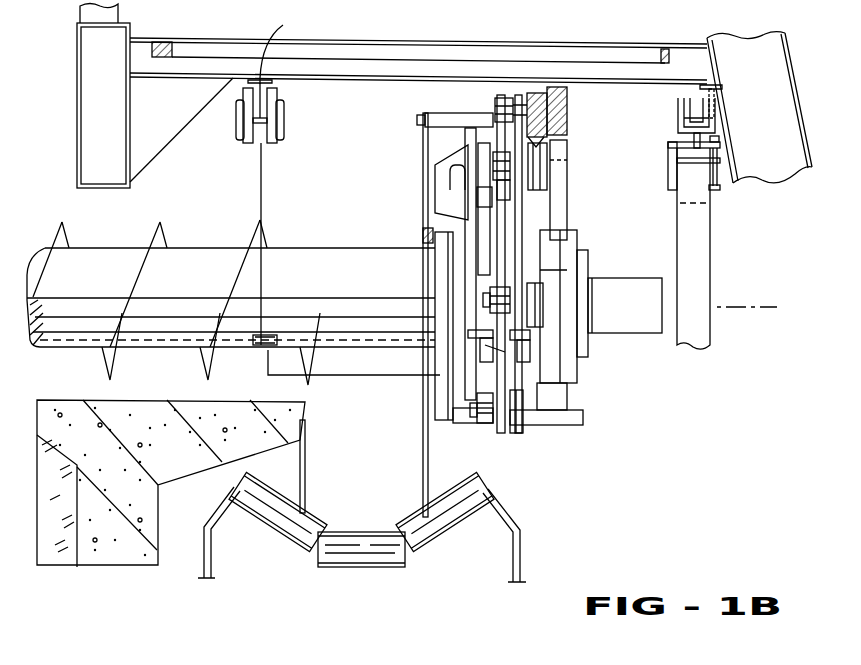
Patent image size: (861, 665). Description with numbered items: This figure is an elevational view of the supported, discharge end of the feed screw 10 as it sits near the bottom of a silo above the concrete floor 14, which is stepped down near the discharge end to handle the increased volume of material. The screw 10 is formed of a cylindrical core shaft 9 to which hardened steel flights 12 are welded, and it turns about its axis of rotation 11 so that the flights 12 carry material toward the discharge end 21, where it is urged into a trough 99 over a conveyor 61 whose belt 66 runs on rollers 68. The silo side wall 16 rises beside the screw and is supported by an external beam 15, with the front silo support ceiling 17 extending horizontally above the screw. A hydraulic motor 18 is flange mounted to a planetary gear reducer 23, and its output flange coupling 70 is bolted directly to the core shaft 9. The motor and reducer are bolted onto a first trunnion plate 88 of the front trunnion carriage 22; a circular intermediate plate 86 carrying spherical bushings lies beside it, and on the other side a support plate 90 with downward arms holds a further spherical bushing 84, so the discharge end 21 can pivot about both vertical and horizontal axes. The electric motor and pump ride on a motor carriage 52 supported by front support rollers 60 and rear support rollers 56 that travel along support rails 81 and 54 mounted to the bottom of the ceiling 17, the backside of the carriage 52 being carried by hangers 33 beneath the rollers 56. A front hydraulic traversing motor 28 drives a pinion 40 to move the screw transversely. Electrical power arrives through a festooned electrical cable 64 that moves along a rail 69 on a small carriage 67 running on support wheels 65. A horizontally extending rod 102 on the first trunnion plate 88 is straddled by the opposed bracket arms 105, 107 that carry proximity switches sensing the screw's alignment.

The cylindrical core shaft 9 is at (115, 248).
The feed screw 10 is at (203, 235).
The axis of rotation 11 is at (170, 300).
The flights 12 is at (62, 237).
The concrete floor 14 is at (78, 398).
The external beam 15 is at (720, 35).
The side wall 16 is at (76, 42).
The front silo support ceiling 17 is at (389, 81).
The hydraulic motor 18 is at (648, 322).
The discharge end 21 is at (335, 252).
The front trunnion carriage 22 is at (525, 287).
The planetary gear reducer 23 is at (467, 287).
The front hydraulic traversing motor 28 is at (440, 183).
The hangers 33 is at (268, 177).
The pinion 40 is at (571, 168).
The motor carriage 52 is at (583, 424).
The support rail 54 is at (283, 25).
The rear support rollers 56 is at (278, 111).
The front support rollers 60 is at (537, 92).
The conveyor 61 is at (398, 571).
The festooned electrical cable 64 is at (719, 190).
The support wheels 65 is at (680, 107).
The belt 66 is at (340, 532).
The small carriage 67 is at (677, 124).
The rollers 68 is at (272, 540).
The rail 69 is at (705, 86).
The flange coupling 70 is at (430, 243).
The support rail 81 is at (556, 86).
The spherical bushing 84 is at (540, 300).
The intermediate plate 86 is at (519, 430).
The first trunnion plate 88 is at (503, 423).
The support plate 90 is at (548, 248).
The trough 99 is at (412, 468).
The horizontally extending rod 102 is at (503, 333).
The bracket arm 105 is at (560, 352).
The bracket arm 107 is at (497, 318).